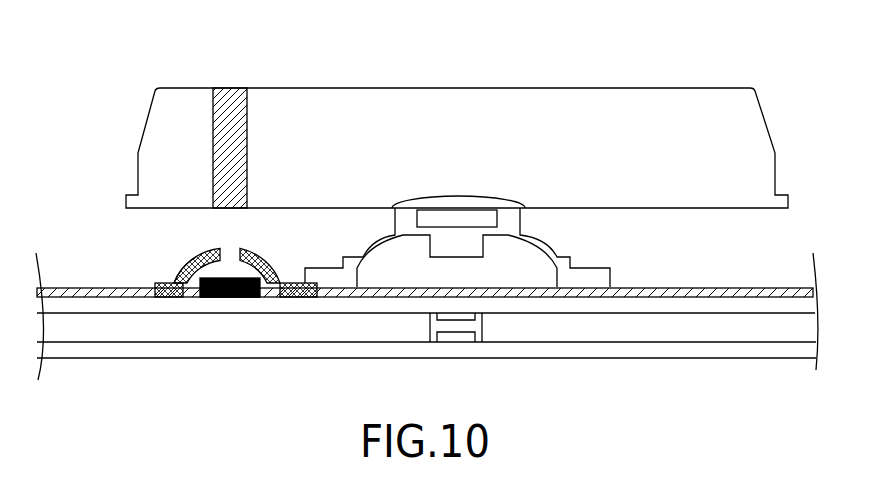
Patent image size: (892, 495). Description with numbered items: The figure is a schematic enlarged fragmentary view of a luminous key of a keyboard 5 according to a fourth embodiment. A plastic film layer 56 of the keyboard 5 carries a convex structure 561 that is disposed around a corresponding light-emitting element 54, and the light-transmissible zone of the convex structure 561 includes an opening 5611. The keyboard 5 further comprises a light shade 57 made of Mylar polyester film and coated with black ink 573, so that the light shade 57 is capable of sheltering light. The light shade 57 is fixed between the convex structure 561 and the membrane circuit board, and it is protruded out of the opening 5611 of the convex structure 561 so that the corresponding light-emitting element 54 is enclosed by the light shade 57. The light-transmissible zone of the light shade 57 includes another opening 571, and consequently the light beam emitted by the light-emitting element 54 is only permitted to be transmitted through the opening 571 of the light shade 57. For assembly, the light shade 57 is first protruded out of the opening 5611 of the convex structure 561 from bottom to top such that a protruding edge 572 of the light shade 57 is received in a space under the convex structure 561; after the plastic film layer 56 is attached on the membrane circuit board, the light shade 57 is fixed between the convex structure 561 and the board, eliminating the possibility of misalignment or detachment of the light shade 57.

The keyboard 5 is at (762, 45).
The light-emitting element 54 is at (230, 298).
The plastic film layer 56 is at (111, 289).
The convex structure 561 is at (160, 278).
The opening 5611 is at (252, 298).
The light shade 57 is at (234, 246).
The opening 571 is at (228, 258).
The protruding edge 572 is at (153, 297).
The black ink 573 is at (272, 252).